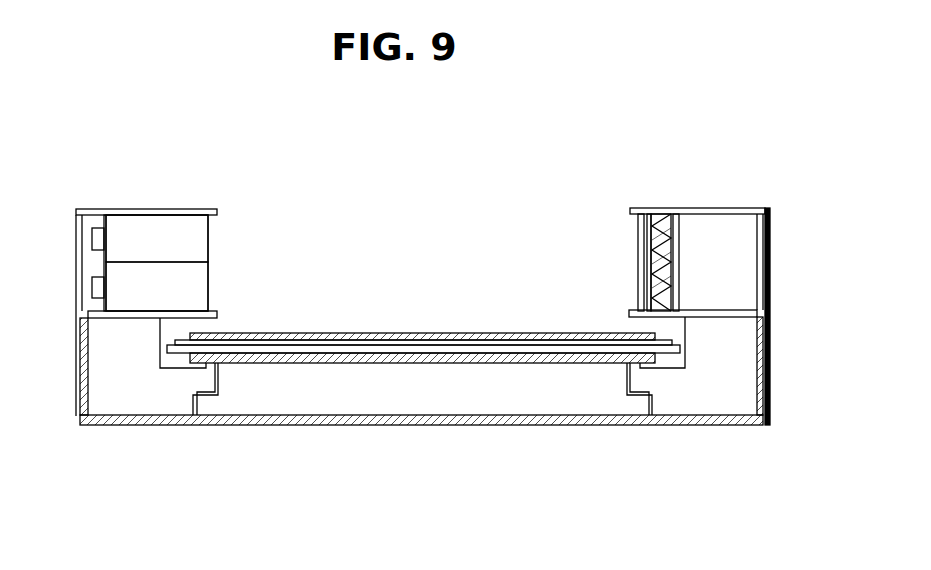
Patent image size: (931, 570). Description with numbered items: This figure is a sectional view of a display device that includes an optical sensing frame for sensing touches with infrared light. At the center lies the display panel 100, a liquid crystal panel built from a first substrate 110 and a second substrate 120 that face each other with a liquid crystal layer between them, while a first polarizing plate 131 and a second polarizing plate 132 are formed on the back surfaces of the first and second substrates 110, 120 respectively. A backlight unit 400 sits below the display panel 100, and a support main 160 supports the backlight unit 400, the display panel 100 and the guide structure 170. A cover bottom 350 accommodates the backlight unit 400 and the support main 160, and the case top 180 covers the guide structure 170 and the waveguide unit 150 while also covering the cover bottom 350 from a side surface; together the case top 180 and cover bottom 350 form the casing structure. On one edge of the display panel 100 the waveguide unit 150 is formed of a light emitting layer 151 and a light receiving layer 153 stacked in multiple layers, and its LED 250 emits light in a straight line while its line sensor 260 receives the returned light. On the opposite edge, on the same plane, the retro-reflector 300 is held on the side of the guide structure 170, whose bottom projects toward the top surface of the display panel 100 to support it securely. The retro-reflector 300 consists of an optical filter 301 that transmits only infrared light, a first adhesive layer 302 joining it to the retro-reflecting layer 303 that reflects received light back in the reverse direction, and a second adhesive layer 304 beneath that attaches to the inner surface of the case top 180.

The display panel 100 is at (423, 291).
The first substrate 110 is at (417, 350).
The second substrate 120 is at (370, 343).
The first polarizing plate 131 is at (377, 267).
The second polarizing plate 132 is at (462, 338).
The waveguide unit 150 is at (213, 263).
The light emitting layer 151 is at (203, 234).
The light receiving layer 153 is at (187, 286).
The support main 160 is at (740, 352).
The guide structure 170 is at (740, 245).
The case top 180 is at (764, 275).
The LED 250 is at (98, 238).
The line sensor 260 is at (98, 285).
The retro-reflector 300 is at (671, 210).
The optical filter 301 is at (642, 235).
The first adhesive layer 302 is at (650, 220).
The retro-reflecting layer 303 is at (660, 220).
The second adhesive layer 304 is at (708, 236).
The cover bottom 350 is at (698, 420).
The backlight unit 400 is at (402, 403).